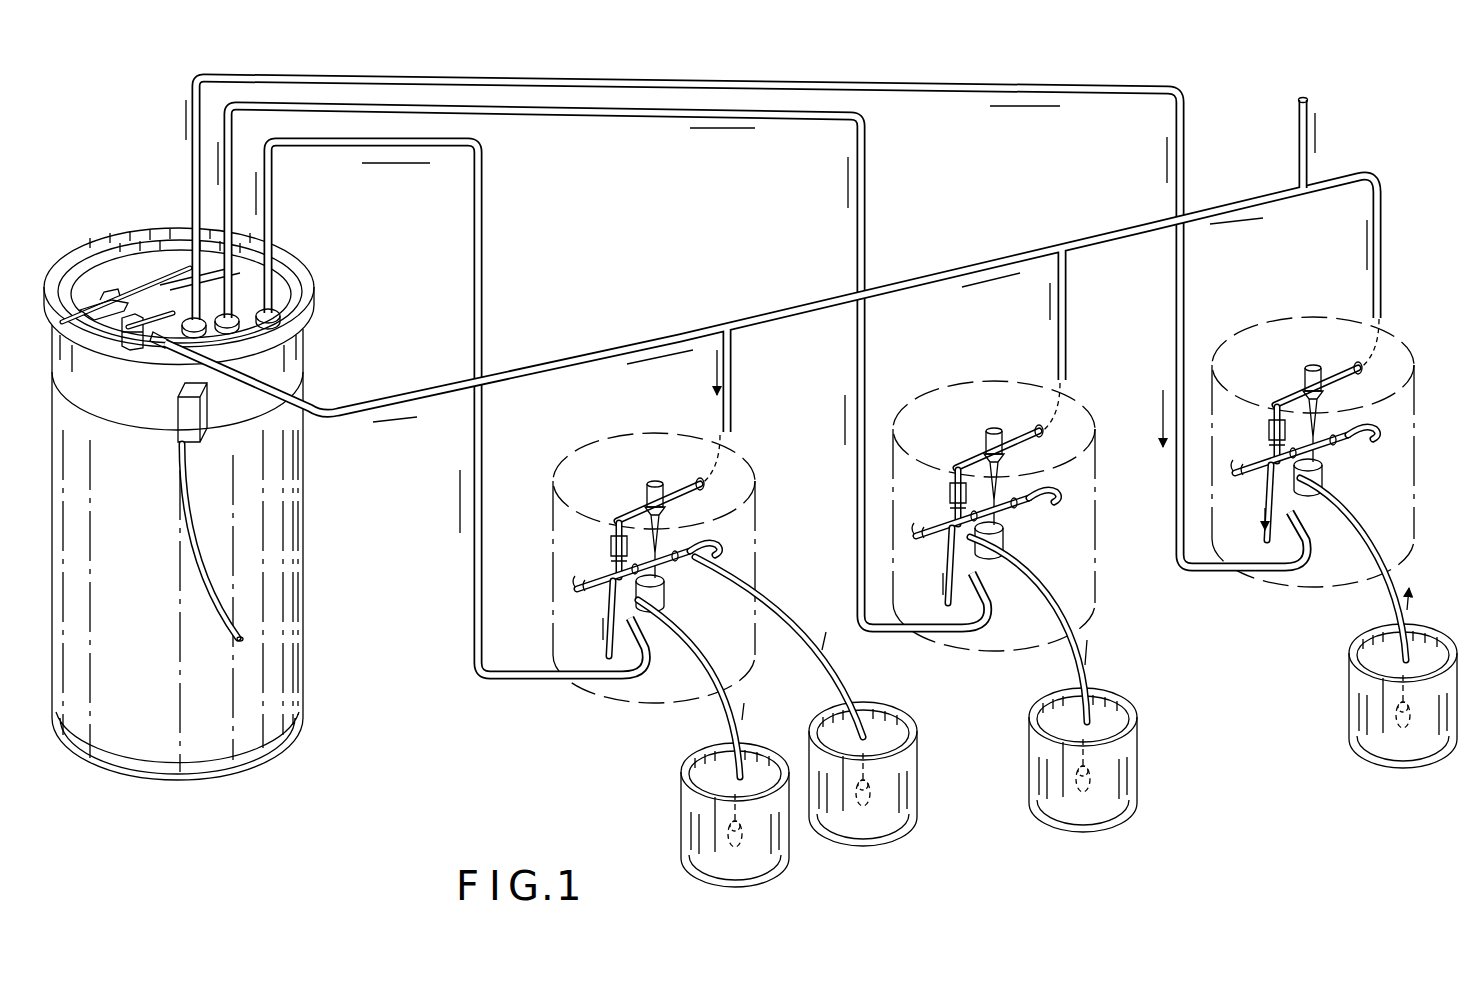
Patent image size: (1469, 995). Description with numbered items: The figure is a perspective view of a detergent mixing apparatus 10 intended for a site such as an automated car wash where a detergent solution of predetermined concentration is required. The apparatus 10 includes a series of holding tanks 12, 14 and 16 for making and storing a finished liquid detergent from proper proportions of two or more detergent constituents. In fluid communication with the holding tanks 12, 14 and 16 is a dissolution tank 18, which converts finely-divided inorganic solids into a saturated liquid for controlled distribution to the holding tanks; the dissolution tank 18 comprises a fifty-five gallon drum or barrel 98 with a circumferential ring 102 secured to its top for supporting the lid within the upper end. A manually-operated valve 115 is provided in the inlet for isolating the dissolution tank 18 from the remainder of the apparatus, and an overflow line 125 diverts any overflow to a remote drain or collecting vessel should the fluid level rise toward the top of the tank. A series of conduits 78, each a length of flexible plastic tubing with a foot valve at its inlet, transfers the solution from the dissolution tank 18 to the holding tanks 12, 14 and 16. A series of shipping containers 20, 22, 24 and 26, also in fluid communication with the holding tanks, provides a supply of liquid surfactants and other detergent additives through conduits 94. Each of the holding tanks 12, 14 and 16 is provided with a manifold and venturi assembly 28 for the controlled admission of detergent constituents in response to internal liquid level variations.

The detergent mixing apparatus 10 is at (1296, 78).
The holding tank 12 is at (627, 728).
The holding tank 14 is at (993, 675).
The holding tank 16 is at (1300, 612).
The dissolution tank 18 is at (148, 222).
The shipping container 20 is at (760, 868).
The shipping container 22 is at (895, 835).
The shipping container 24 is at (1135, 757).
The shipping container 26 is at (1348, 700).
The manifold and venturi assembly 28 is at (620, 500).
The conduit 78 is at (838, 86).
The conduit 94 is at (1395, 592).
The barrel 98 is at (287, 678).
The circumferential ring 102 is at (297, 352).
The manually-operated valve 115 is at (146, 340).
The overflow line 125 is at (190, 539).